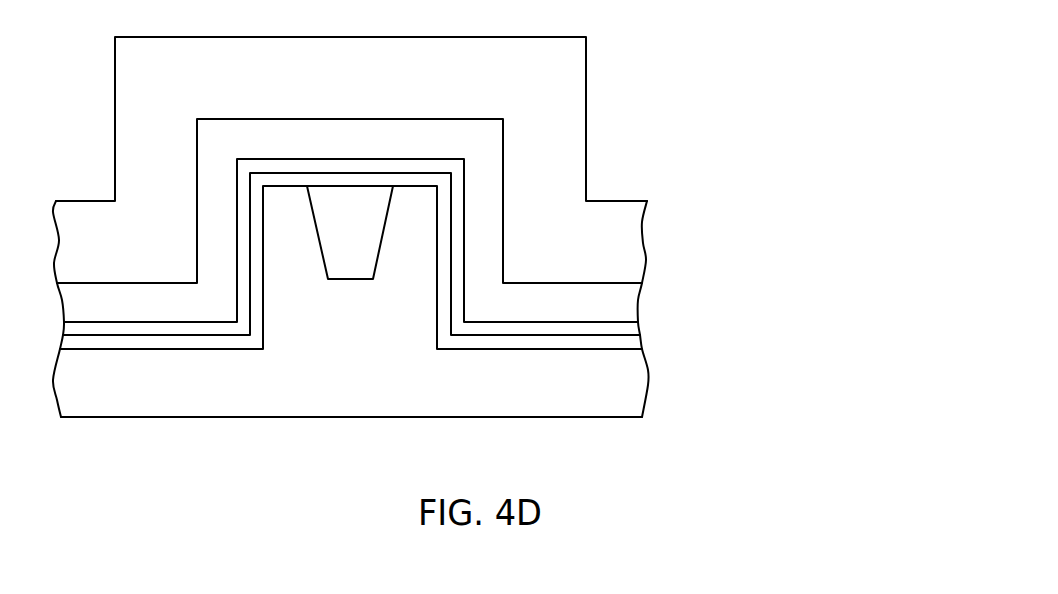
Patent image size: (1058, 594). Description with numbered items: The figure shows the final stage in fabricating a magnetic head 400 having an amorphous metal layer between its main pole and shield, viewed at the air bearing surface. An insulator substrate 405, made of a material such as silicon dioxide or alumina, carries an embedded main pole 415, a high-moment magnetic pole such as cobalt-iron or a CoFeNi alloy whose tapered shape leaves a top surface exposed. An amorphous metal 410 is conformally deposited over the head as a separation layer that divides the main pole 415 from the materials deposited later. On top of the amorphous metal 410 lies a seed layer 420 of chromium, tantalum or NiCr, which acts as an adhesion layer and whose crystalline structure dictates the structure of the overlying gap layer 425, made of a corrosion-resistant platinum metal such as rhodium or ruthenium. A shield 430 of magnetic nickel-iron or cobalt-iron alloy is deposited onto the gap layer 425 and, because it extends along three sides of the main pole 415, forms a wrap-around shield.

The magnetic head 400 is at (668, 95).
The insulator substrate 405 is at (648, 383).
The amorphous metal 410 is at (640, 342).
The main pole 415 is at (352, 280).
The seed layer 420 is at (638, 327).
The gap layer 425 is at (638, 308).
The shield 430 is at (643, 249).